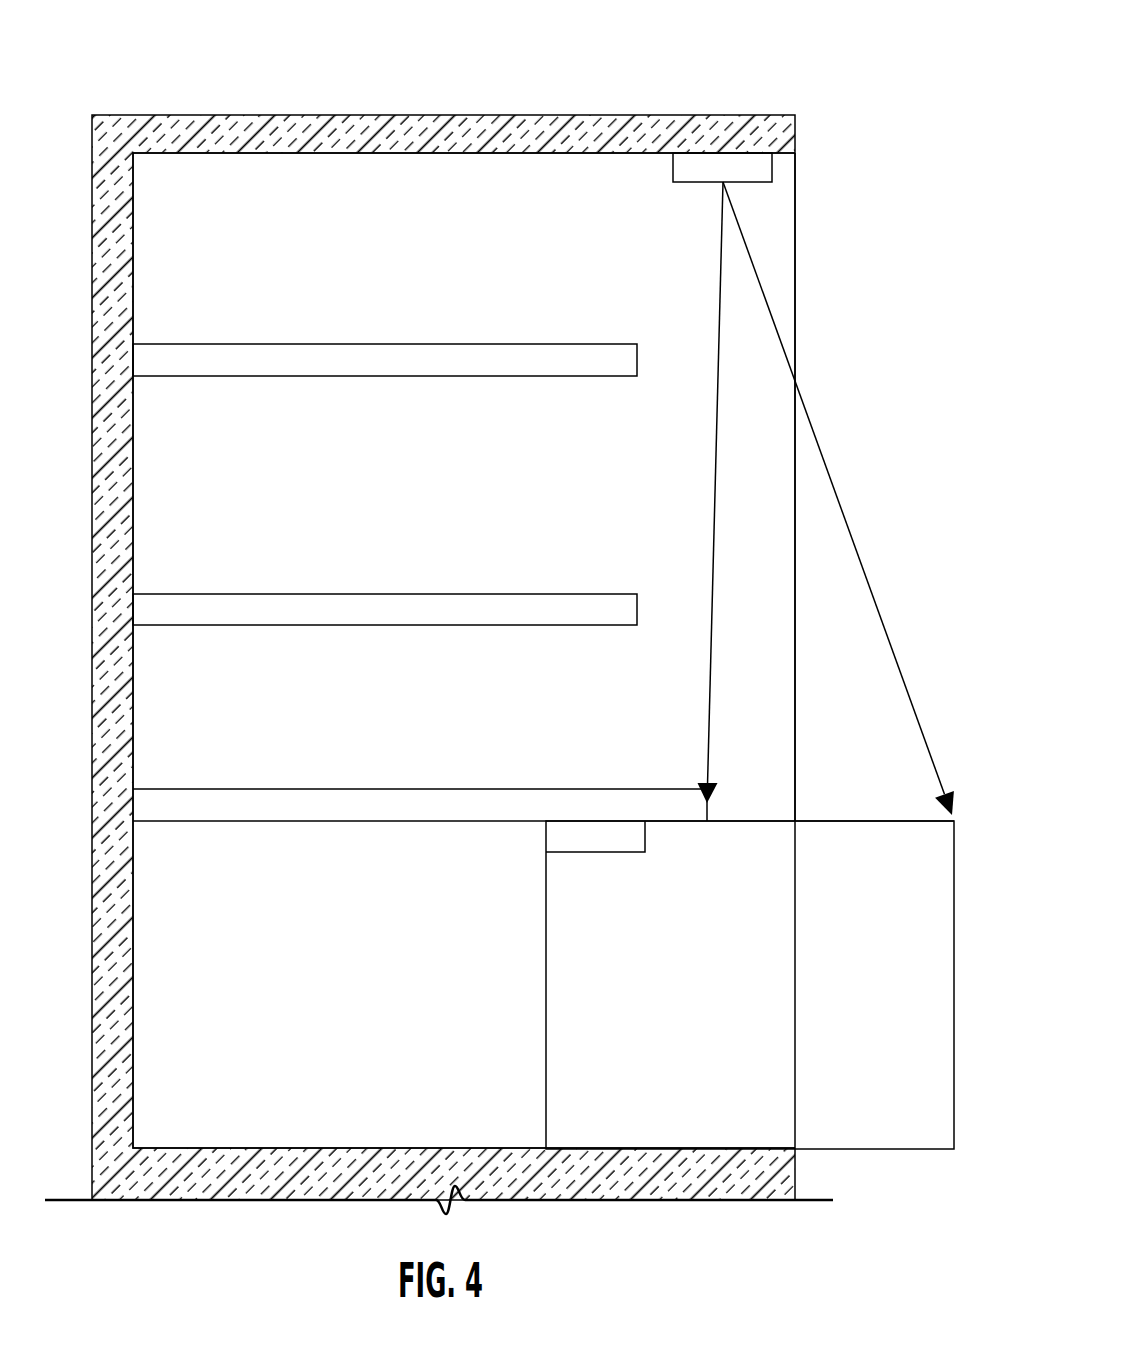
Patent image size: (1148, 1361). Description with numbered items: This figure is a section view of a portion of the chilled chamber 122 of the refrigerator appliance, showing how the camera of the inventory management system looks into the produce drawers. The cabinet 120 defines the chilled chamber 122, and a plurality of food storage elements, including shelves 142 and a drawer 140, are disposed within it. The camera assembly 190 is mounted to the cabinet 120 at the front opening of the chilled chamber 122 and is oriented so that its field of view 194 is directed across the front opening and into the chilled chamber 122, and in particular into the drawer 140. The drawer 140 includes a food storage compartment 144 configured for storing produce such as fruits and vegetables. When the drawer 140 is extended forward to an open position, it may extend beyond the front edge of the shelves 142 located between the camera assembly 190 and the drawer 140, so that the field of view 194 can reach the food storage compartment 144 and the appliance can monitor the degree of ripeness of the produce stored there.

The cabinet 120 is at (527, 122).
The chilled chamber 122 is at (503, 486).
The shelves 142 is at (512, 353).
The drawer 140 is at (882, 1103).
The food storage compartment 144 is at (778, 997).
The camera assembly 190 is at (760, 167).
The field of view 194 is at (845, 523).